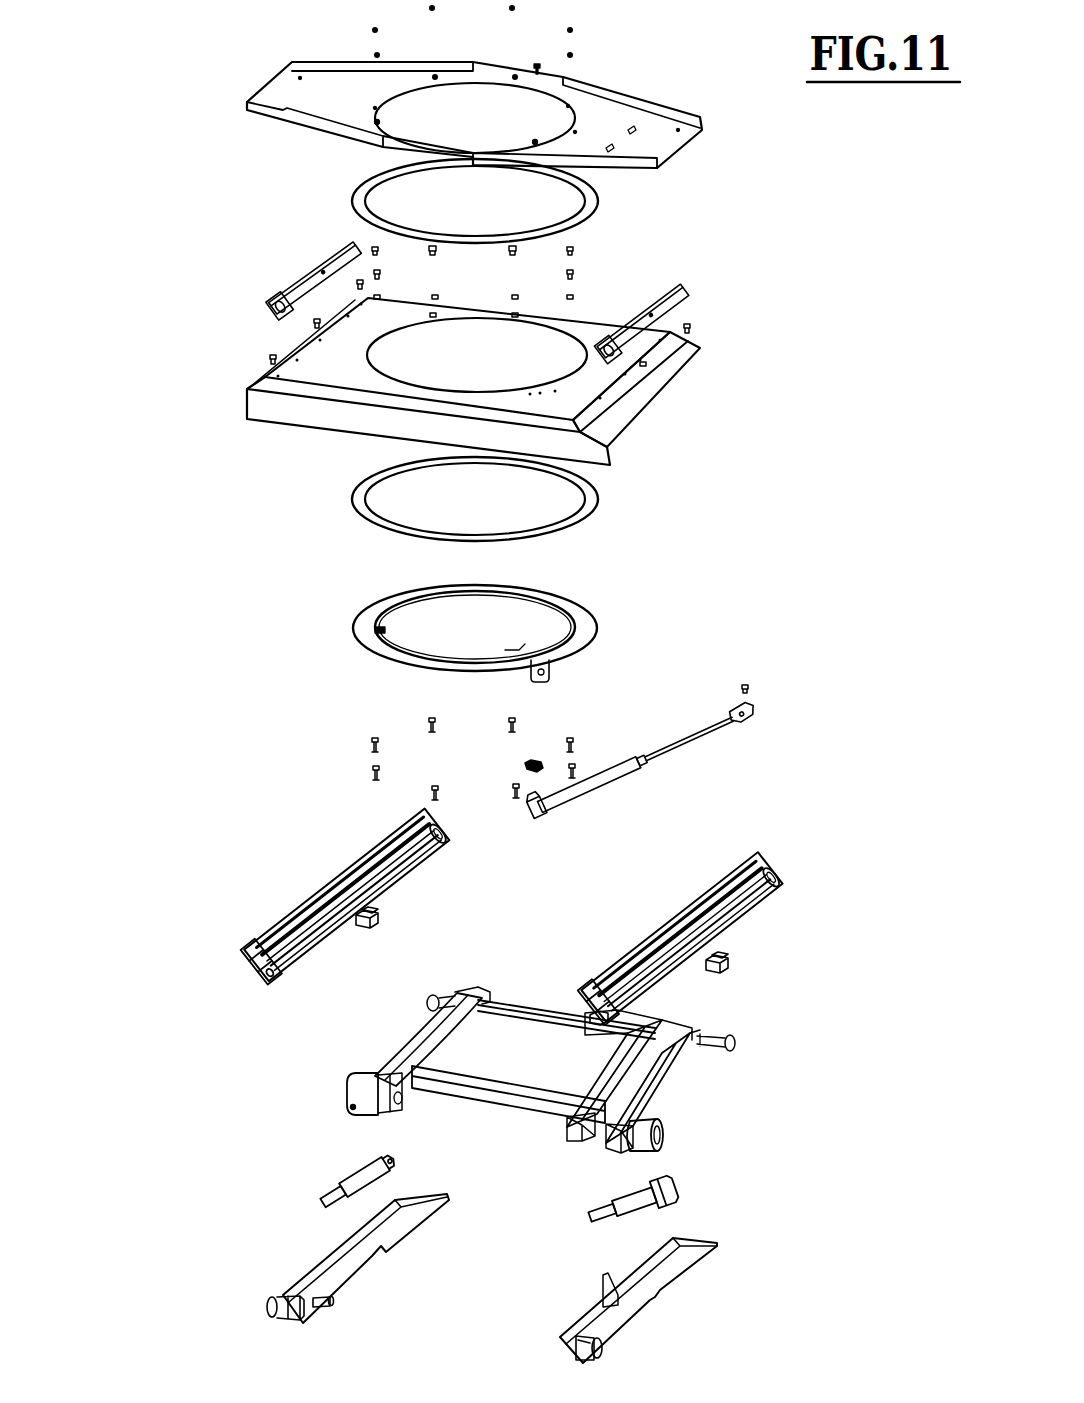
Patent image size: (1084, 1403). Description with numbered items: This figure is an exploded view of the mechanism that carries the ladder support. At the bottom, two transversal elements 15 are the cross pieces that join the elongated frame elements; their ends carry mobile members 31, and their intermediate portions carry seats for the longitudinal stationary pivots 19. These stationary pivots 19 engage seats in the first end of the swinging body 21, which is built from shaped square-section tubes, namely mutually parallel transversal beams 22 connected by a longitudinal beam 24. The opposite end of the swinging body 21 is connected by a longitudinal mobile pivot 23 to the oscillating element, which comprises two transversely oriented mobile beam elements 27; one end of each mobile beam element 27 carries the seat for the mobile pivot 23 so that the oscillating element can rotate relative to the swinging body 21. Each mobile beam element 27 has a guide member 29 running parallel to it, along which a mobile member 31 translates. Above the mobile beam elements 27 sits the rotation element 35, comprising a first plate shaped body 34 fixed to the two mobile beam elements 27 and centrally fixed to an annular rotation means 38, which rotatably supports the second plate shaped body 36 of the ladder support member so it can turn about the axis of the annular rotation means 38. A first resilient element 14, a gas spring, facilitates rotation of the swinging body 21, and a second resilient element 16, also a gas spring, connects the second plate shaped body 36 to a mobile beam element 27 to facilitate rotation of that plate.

The first resilient element 14 is at (358, 1165).
The transversal element 15 is at (337, 1263).
The second resilient element 16 is at (640, 757).
The longitudinal stationary pivot 19 is at (350, 1093).
The swinging body 21 is at (673, 1092).
The transversal beam 22 is at (422, 1042).
The longitudinal mobile pivot 23 is at (538, 1013).
The longitudinal beam 24 is at (500, 1092).
The mobile beam element 27 is at (307, 907).
The guide member 29 is at (250, 977).
The mobile member 31 is at (260, 1300).
The first plate shaped body 34 is at (370, 383).
The rotation element 35 is at (180, 220).
The second plate shaped body 36 is at (357, 95).
The annular rotation means 38 is at (593, 625).